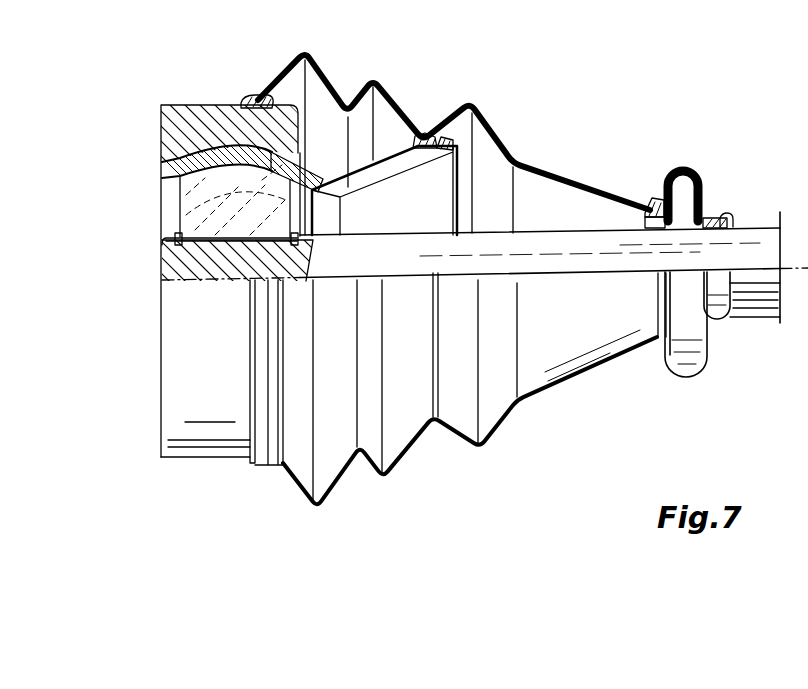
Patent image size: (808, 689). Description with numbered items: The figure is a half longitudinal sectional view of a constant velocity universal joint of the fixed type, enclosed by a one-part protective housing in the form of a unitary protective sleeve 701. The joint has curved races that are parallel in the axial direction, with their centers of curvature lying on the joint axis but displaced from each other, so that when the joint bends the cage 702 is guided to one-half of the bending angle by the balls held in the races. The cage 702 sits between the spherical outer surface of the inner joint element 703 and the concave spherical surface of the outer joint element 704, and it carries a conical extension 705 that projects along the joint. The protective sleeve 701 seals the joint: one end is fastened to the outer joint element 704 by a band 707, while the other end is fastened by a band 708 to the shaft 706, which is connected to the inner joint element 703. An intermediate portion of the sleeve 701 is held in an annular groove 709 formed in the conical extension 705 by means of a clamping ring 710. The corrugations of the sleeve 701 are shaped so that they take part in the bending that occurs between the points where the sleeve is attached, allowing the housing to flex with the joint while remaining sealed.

The protective sleeve 701 is at (579, 451).
The cage 702 is at (187, 148).
The inner joint element 703 is at (203, 157).
The outer joint element 704 is at (220, 123).
The conical extension 705 is at (348, 187).
The shaft 706 is at (552, 240).
The band 707 is at (252, 100).
The band 708 is at (715, 213).
The annular groove 709 is at (443, 143).
The clamping ring 710 is at (430, 138).